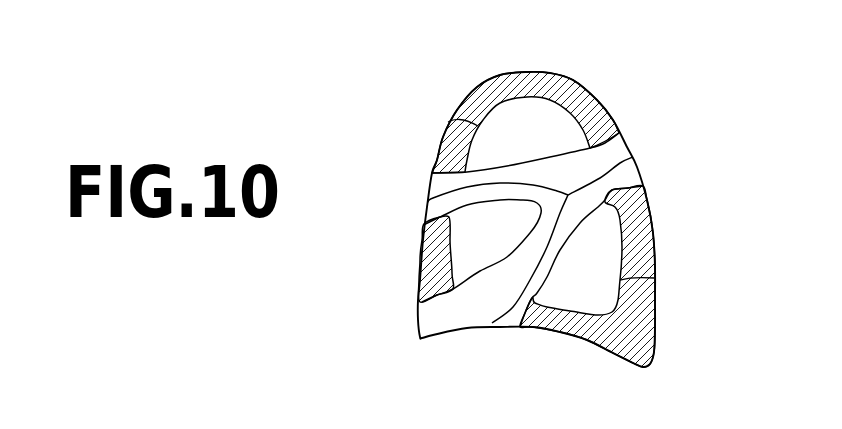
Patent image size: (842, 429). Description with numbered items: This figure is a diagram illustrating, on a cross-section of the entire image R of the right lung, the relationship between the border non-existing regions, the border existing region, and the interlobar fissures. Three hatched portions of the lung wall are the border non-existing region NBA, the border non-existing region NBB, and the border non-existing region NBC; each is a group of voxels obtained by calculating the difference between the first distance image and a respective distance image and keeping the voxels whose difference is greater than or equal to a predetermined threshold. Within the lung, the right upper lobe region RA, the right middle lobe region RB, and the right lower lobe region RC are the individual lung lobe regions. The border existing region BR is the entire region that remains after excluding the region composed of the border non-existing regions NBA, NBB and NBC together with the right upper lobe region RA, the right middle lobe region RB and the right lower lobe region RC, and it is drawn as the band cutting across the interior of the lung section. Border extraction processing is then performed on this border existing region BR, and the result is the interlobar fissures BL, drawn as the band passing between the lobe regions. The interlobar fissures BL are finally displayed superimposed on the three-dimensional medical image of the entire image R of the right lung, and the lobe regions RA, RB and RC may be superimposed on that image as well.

The entire image of the right lung R is at (565, 82).
The border non-existing region NBA is at (492, 88).
The border non-existing region NBB is at (432, 261).
The border non-existing region NBC is at (649, 218).
The right upper lobe region RA is at (448, 123).
The right middle lobe region RB is at (478, 275).
The right lower lobe region RC is at (654, 281).
The interlobar fissures BL is at (624, 158).
The border existing region BR is at (630, 177).